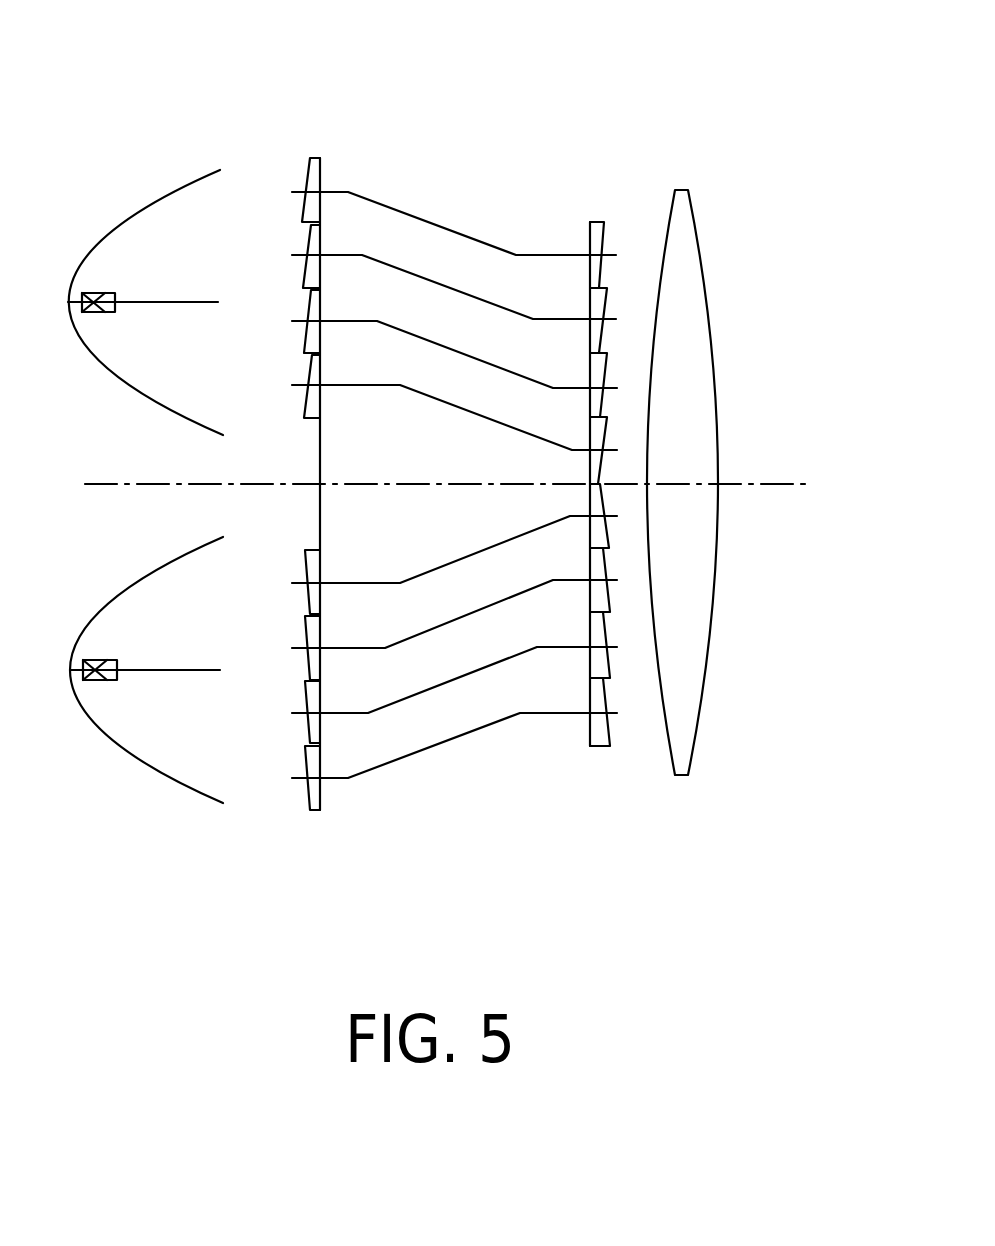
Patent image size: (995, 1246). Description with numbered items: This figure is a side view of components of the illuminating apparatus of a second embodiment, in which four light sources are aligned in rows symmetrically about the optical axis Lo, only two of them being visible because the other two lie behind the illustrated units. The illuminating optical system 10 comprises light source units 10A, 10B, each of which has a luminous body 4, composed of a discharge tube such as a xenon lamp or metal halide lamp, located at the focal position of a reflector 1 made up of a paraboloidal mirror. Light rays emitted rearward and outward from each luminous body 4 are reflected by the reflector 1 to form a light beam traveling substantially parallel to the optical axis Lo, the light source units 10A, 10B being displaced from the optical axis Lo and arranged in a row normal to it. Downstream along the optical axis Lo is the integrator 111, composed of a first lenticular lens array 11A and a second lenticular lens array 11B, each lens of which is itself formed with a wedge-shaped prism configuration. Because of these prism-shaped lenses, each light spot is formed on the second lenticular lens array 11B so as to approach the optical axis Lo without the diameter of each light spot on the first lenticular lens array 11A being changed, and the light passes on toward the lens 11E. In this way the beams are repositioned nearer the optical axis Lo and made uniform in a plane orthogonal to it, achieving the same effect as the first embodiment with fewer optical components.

The reflector 1 is at (188, 185).
The luminous body 4 is at (97, 293).
The illuminating optical system 10 is at (60, 394).
The light source unit 10A is at (110, 222).
The light source unit 10B is at (110, 592).
The first lenticular lens array 11A is at (307, 172).
The second lenticular lens array 11B is at (613, 227).
The lens 11E is at (705, 247).
The integrator 111 is at (497, 73).
The optical axis Lo is at (752, 480).